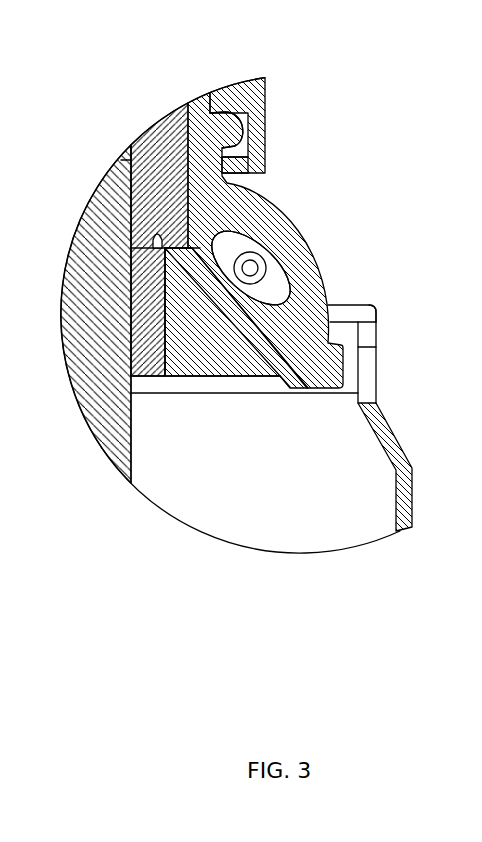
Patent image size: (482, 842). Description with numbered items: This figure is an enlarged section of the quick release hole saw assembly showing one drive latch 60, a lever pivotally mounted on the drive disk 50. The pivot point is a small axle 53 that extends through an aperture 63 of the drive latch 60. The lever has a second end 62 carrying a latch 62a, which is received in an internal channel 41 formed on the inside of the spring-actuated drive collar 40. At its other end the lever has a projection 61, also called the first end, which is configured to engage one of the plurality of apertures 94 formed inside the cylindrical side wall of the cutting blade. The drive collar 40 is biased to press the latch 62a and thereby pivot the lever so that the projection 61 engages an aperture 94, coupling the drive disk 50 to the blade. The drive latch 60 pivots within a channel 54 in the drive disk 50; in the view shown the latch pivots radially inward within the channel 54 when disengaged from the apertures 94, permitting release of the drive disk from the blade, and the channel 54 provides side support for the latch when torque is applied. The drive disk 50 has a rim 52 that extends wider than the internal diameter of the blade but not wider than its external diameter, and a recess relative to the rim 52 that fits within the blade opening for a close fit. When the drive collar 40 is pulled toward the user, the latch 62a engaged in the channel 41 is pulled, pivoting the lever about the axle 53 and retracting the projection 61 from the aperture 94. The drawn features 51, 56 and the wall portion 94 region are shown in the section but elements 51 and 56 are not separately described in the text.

The spring-actuated drive collar 40 is at (249, 76).
The channel 41 is at (264, 100).
The second end 62 is at (250, 130).
The latch 62a is at (256, 168).
The aperture 63 is at (230, 240).
The drive latch 60 is at (321, 268).
The flange 51 is at (343, 313).
The rim 52 is at (372, 322).
The projection 61 is at (356, 361).
The apertures 94 is at (366, 380).
The channel 54 is at (293, 394).
The outer flange 56 is at (270, 394).
The axle 53 is at (152, 243).
The drive disk 50 is at (195, 332).